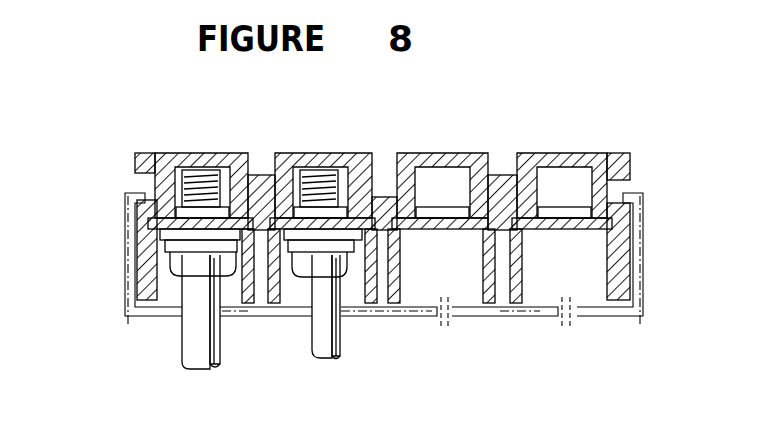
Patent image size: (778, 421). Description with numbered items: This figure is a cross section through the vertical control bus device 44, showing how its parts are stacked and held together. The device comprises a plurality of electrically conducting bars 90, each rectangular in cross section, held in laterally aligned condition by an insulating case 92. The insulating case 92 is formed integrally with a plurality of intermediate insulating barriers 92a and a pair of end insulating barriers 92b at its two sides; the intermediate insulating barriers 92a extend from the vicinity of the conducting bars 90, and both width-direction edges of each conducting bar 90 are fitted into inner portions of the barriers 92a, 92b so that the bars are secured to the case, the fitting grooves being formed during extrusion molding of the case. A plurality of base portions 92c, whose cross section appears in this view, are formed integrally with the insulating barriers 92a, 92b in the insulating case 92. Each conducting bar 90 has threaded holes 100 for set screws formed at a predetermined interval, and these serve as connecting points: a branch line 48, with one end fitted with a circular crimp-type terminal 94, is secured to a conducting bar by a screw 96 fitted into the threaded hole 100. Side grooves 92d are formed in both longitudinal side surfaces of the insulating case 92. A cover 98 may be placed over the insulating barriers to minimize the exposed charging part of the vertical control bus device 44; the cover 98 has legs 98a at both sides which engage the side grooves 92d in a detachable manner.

The vertical control bus device 44 is at (96, 194).
The branch line 48 is at (192, 352).
The conducting bar 90 is at (150, 228).
The insulating case 92 is at (341, 152).
The intermediate insulating barrier 92a is at (283, 300).
The end insulating barrier 92b is at (160, 290).
The base portion 92c is at (268, 156).
The side groove 92d is at (134, 170).
The circular crimp-type terminal 94 is at (152, 240).
The screw 96 is at (222, 312).
The cover 98 is at (464, 320).
The leg 98a is at (125, 195).
The threaded hole 100 is at (430, 207).